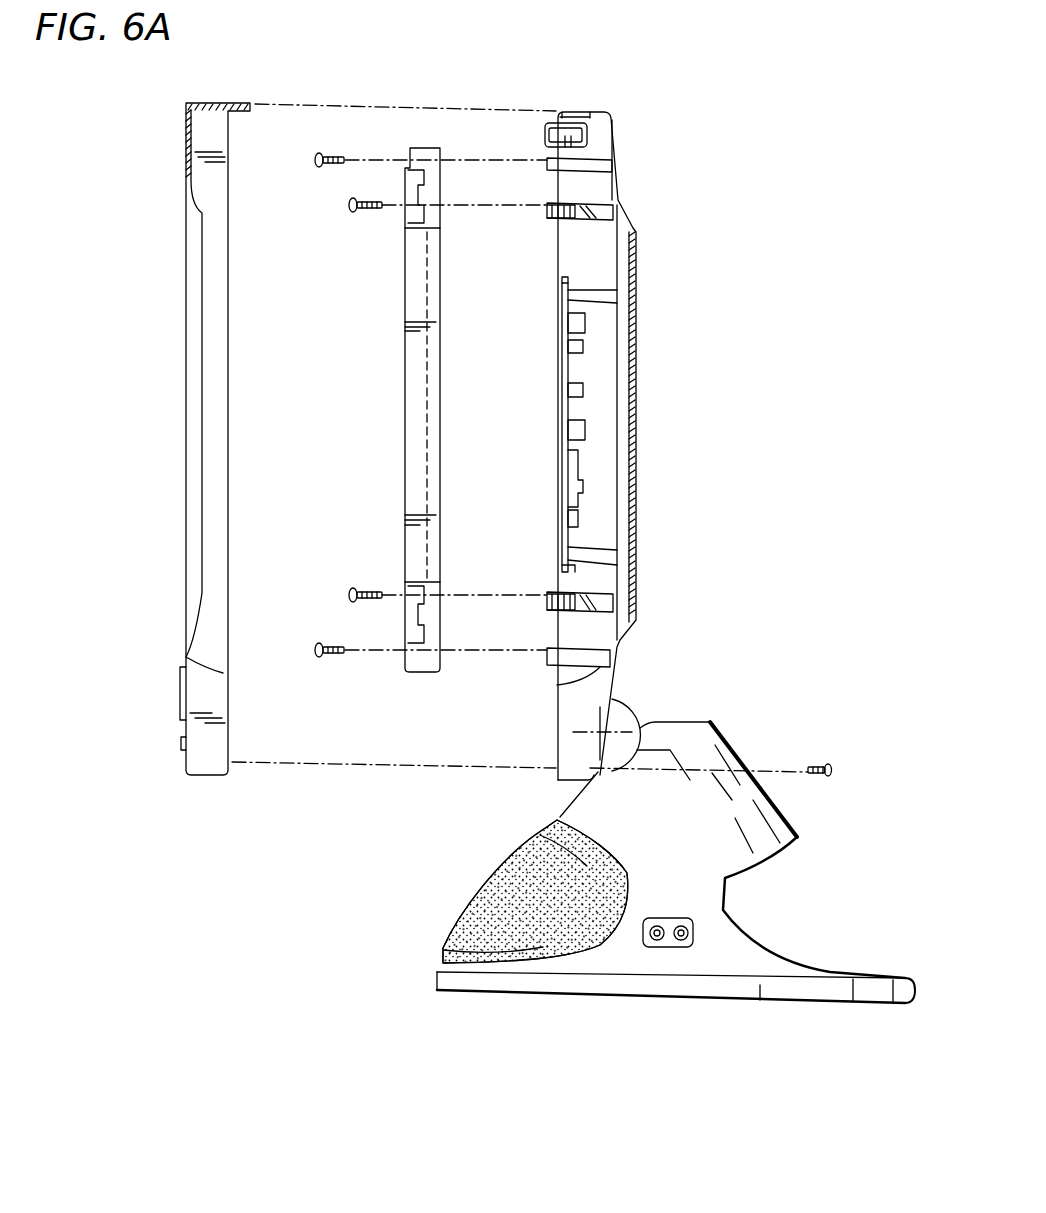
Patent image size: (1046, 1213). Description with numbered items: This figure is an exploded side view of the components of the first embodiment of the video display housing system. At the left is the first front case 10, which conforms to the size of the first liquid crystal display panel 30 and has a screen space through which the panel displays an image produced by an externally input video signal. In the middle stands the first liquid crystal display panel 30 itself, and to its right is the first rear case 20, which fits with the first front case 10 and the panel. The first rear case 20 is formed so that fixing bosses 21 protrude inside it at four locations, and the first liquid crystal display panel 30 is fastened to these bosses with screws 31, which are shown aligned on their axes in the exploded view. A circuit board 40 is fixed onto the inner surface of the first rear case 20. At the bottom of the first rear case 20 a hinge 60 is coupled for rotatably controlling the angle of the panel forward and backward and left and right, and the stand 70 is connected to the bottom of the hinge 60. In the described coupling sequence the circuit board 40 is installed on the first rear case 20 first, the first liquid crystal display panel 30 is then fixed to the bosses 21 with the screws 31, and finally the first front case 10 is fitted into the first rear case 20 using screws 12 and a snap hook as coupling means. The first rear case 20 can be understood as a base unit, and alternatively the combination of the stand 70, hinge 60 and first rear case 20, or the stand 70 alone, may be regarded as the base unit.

The first front case 10 is at (186, 408).
The screws 12 is at (831, 765).
The first rear case 20 is at (637, 400).
The fixing bosses 21 is at (552, 210).
The first liquid crystal display panel 30 is at (405, 405).
The screws 31 is at (349, 205).
The circuit board 40 is at (565, 440).
The hinge 60 is at (732, 739).
The stand 70 is at (440, 936).